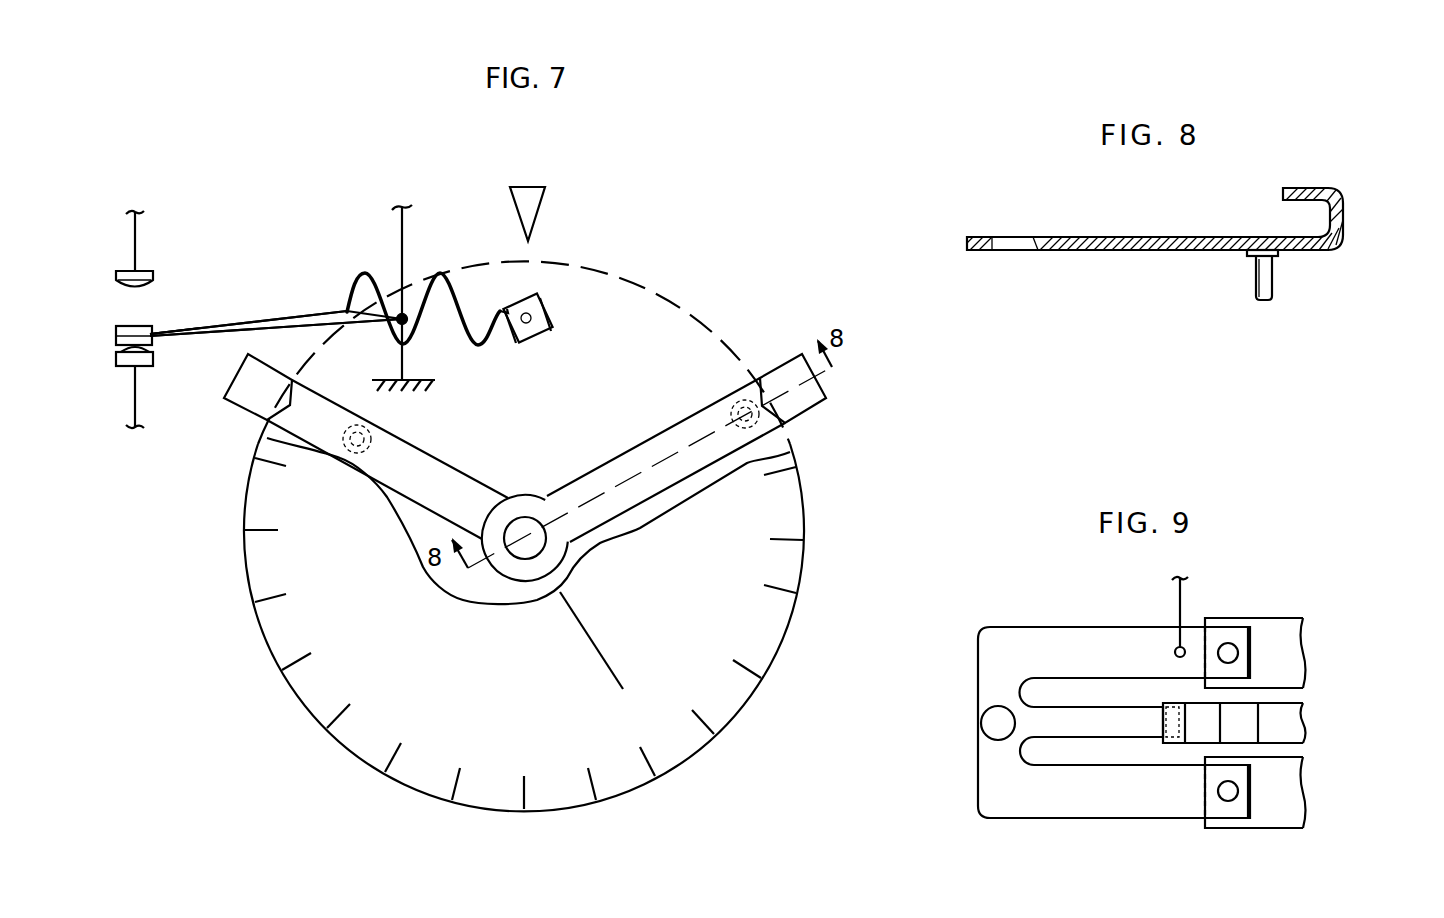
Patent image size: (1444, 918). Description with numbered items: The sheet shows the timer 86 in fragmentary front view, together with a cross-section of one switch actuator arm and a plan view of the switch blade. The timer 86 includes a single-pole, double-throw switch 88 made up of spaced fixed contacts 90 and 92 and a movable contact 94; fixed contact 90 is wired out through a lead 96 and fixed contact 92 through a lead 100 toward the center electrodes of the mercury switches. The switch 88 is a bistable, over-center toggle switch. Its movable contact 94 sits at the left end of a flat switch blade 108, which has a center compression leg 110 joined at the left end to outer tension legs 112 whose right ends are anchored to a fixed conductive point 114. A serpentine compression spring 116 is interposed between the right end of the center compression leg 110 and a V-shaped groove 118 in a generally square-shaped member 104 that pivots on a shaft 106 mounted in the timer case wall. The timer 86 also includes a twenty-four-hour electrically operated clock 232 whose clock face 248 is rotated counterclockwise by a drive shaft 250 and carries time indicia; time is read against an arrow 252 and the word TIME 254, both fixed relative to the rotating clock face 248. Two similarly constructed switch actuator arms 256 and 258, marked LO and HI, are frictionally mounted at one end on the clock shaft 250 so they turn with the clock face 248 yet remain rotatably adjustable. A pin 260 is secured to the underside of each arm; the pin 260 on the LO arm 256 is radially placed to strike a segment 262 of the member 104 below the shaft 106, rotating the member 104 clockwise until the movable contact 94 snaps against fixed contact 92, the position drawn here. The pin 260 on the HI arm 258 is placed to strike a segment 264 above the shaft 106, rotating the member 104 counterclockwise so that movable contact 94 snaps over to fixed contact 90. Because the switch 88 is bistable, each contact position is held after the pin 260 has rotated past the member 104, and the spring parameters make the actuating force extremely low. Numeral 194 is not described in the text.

In FIG. 7, the timer 86 is at (700, 205).
In FIG. 7, the switch 88 is at (192, 305).
In FIG. 7, the fixed contact 90 is at (116, 274).
In FIG. 7, the fixed contact 92 is at (116, 358).
In FIG. 7, the movable contact 94 is at (116, 333).
In FIG. 9, the movable contact 94 is at (988, 728).
In FIG. 7, the lead 96 is at (128, 238).
In FIG. 7, the lead 100 is at (130, 387).
In FIG. 7, the square-shaped member 104 is at (515, 345).
In FIG. 7, the shaft 106 is at (531, 303).
In FIG. 7, the switch blade 108 is at (200, 342).
In FIG. 9, the switch blade 108 is at (975, 698).
In FIG. 7, the center compression leg 110 is at (275, 320).
In FIG. 9, the center compression leg 110 is at (1068, 720).
In FIG. 7, the outer tension legs 112 is at (275, 330).
In FIG. 9, the outer tension legs 112 is at (1133, 657).
In FIG. 7, the fixed conductive point 114 is at (404, 313).
In FIG. 9, the fixed conductive point 114 is at (1285, 655).
In FIG. 7, the serpentine compression spring 116 is at (346, 306).
In FIG. 9, the serpentine compression spring 116 is at (1288, 727).
In FIG. 7, the V-shaped groove 118 is at (512, 302).
In FIG. 7, the pin 194 is at (398, 250).
In FIG. 9, the pin 194 is at (1181, 598).
In FIG. 7, the clock 232 is at (697, 768).
In FIG. 7, the clock face 248 is at (712, 683).
In FIG. 7, the drive shaft 250 is at (525, 518).
In FIG. 7, the arrow 252 is at (540, 212).
In FIG. 7, the word TIME 254 is at (568, 137).
In FIG. 7, the switch actuator arm 256 is at (232, 392).
In FIG. 7, the switch actuator arm 258 is at (828, 398).
In FIG. 8, the switch actuator arm 258 is at (1318, 190).
In FIG. 7, the pin 260 is at (368, 433).
In FIG. 8, the pin 260 is at (1273, 282).
In FIG. 7, the segment 262 is at (540, 333).
In FIG. 7, the segment 264 is at (547, 314).